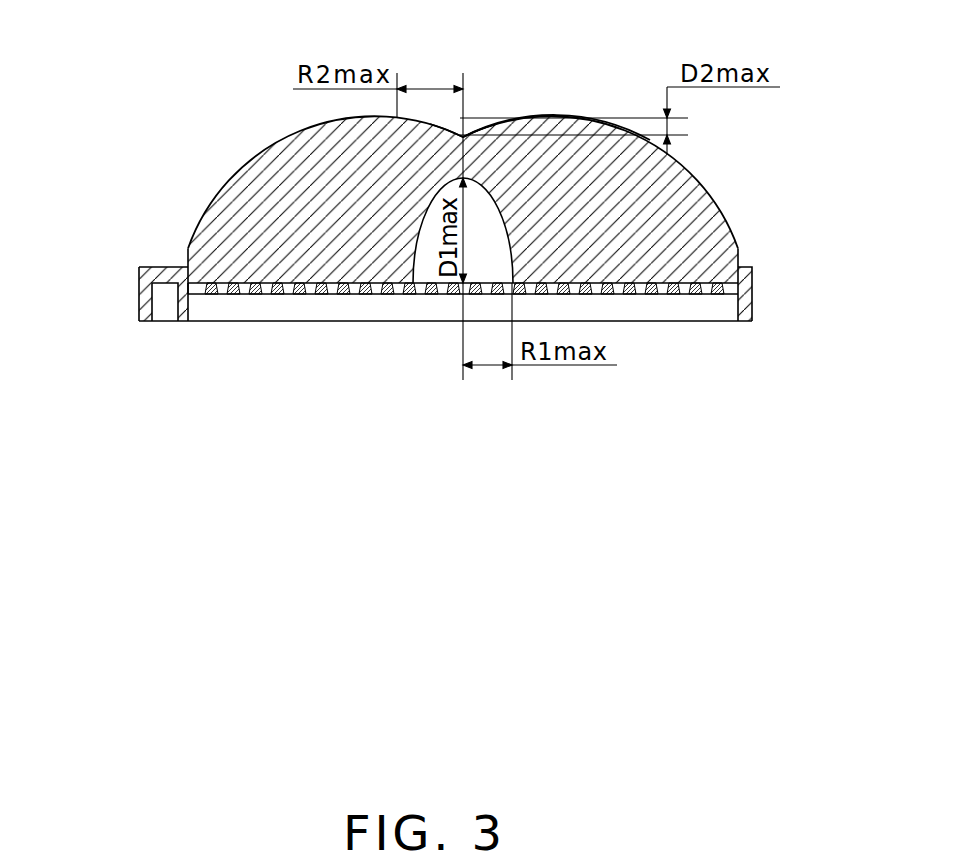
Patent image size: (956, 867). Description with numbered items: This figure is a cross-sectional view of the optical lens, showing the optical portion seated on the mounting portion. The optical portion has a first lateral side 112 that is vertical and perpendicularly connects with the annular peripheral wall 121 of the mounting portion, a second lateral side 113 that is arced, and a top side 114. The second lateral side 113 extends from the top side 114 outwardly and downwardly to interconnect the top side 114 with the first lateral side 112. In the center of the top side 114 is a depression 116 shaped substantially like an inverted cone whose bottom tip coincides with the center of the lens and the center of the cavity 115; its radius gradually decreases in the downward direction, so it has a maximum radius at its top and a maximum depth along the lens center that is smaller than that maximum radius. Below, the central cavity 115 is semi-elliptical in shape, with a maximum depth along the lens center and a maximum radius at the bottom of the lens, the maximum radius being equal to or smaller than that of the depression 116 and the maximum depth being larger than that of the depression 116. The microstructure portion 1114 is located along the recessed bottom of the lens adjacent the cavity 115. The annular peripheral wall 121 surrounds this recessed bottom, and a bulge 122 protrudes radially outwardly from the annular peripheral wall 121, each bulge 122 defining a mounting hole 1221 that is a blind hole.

The first lateral side 112 is at (738, 253).
The second lateral side 113 is at (690, 172).
The top side 114 is at (545, 118).
The cavity 115 is at (440, 250).
The depression 116 is at (455, 136).
The microstructures 1114 is at (265, 293).
The annular peripheral wall 121 is at (752, 312).
The bulge 122 is at (148, 267).
The mounting hole 1221 is at (165, 302).